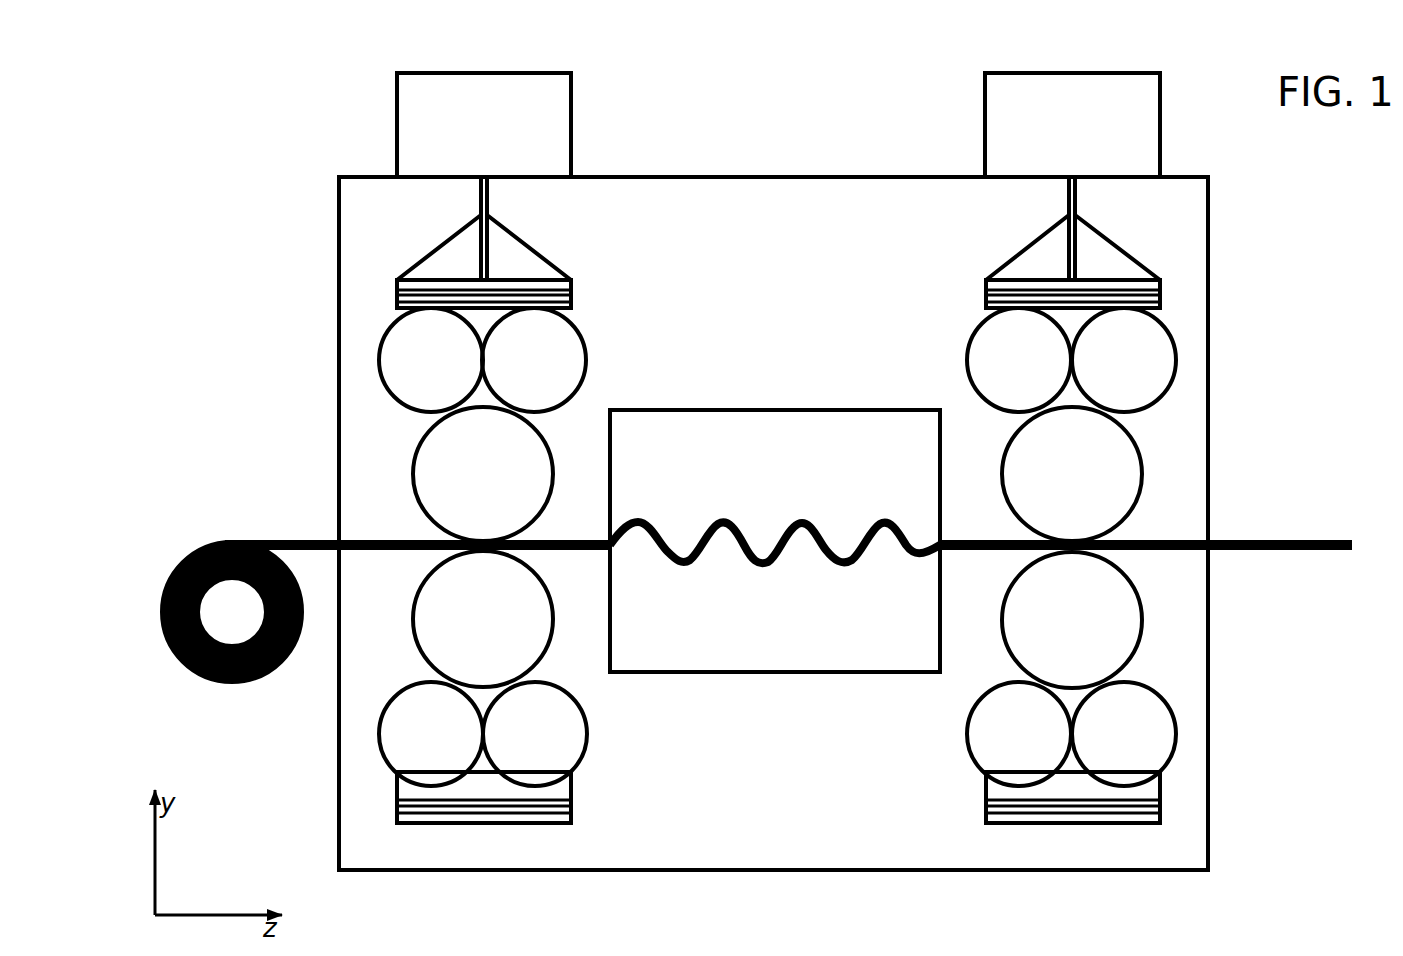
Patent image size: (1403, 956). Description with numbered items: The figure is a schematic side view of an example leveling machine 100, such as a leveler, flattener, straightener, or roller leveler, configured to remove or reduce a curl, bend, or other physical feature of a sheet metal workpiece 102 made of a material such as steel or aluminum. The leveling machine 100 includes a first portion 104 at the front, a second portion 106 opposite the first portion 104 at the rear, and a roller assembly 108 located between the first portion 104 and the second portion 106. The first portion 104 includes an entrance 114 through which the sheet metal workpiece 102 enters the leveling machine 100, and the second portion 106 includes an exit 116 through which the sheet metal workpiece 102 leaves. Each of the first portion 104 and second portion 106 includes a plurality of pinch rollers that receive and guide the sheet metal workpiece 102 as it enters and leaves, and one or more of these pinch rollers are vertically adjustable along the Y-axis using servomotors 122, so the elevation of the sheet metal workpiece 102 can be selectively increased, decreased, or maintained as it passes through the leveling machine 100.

The leveling machine 100 is at (337, 110).
The sheet metal workpiece 102 is at (210, 540).
The first portion 104 is at (471, 565).
The second portion 106 is at (1079, 561).
The roller assembly 108 is at (838, 410).
The entrance 114 is at (325, 525).
The exit 116 is at (1225, 528).
The servomotors 122 is at (428, 73).